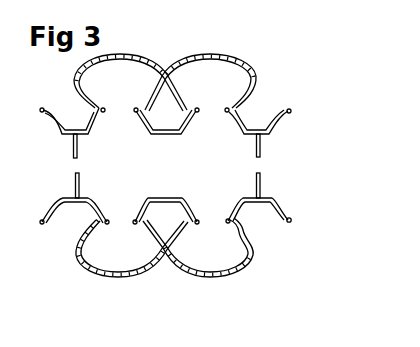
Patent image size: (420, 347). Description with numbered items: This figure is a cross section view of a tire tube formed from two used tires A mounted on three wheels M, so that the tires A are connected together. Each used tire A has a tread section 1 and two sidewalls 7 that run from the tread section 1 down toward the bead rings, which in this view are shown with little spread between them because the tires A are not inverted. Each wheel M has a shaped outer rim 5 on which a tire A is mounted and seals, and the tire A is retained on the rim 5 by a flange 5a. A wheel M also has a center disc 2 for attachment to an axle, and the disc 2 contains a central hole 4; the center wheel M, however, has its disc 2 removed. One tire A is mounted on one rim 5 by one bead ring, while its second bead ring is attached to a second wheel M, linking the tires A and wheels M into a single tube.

The tread section 1 is at (92, 276).
The center disc 2 is at (80, 145).
The central hole 4 is at (78, 163).
The outer rim 5 is at (93, 207).
The flange 5a is at (285, 216).
The sidewall 7 is at (148, 92).
The used tire A is at (167, 53).
The wheel M is at (13, 115).